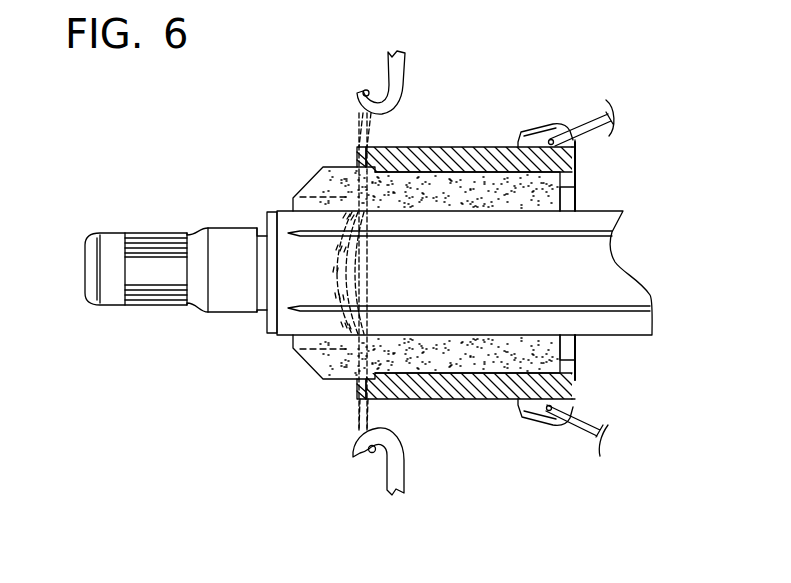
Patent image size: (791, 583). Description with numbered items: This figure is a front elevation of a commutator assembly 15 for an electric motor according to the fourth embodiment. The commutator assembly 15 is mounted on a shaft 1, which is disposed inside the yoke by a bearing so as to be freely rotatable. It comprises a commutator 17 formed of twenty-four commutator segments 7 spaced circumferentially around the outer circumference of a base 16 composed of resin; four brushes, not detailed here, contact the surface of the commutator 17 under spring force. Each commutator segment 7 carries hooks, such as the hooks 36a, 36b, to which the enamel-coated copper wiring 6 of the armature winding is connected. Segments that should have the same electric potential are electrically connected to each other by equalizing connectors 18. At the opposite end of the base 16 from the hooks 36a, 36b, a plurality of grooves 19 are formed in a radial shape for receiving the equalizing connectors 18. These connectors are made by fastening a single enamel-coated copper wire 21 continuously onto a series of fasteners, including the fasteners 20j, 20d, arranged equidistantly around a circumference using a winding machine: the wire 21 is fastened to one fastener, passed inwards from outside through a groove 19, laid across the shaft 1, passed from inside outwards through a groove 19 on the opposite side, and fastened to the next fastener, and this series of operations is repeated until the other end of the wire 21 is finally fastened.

The shaft 1 is at (290, 322).
The wiring 6 is at (607, 135).
The commutator segments 7 is at (448, 388).
The commutator assembly 15 is at (583, 365).
The base 16 is at (328, 362).
The commutator 17 is at (477, 363).
The equalizing connectors 18 is at (357, 150).
The grooves 19 is at (348, 385).
The fastener 20j is at (388, 72).
The fastener 20d is at (392, 478).
The wire 21 is at (372, 130).
The hook 36a is at (543, 410).
The hook 36b is at (535, 130).